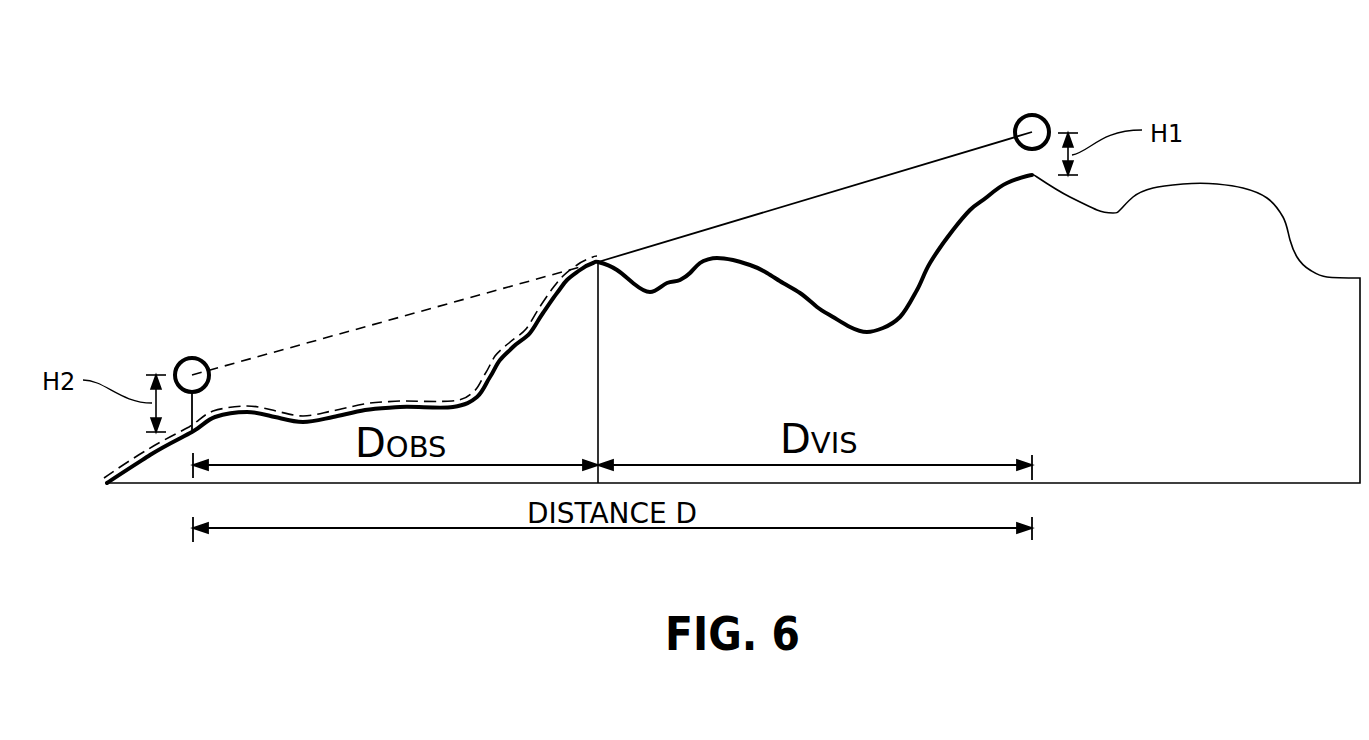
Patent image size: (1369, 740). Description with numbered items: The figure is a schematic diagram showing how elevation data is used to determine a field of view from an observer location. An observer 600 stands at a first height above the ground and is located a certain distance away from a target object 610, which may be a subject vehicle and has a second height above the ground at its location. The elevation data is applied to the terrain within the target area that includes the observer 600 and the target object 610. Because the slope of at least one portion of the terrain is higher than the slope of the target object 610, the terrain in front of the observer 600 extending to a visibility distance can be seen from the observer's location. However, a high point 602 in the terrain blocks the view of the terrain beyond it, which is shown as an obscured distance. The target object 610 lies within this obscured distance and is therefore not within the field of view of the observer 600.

The observer 600 is at (1030, 114).
The high point 602 is at (597, 258).
The target object 610 is at (192, 357).